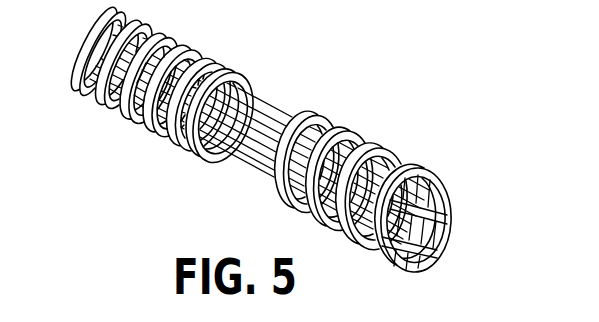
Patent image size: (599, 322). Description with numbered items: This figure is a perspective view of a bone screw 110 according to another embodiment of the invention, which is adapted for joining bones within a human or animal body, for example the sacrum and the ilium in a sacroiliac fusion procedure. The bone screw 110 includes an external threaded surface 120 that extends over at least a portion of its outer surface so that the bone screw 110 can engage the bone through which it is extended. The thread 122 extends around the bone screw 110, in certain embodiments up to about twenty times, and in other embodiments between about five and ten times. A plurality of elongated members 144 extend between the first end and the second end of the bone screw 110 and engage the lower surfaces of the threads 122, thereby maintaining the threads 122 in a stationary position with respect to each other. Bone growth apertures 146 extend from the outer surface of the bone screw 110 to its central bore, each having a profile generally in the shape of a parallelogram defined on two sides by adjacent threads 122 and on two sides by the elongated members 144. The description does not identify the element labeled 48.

The bone screw 110 is at (284, 139).
The ring 48 is at (290, 110).
The external threaded surface 120 is at (133, 125).
The elongated members 144 is at (242, 157).
The thread 122 is at (383, 139).
The bone growth apertures 146 is at (427, 243).